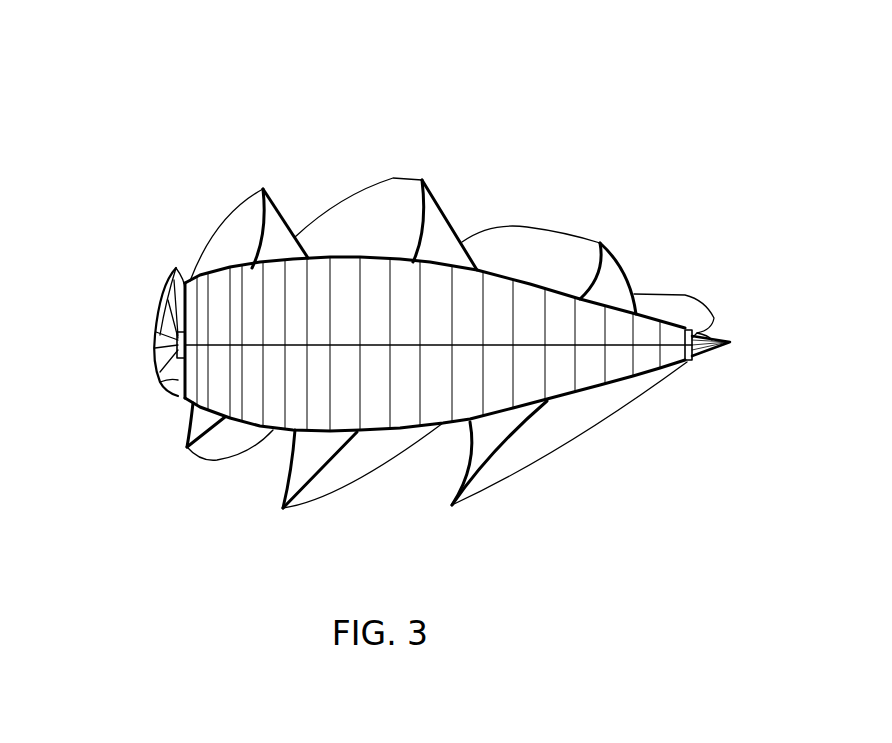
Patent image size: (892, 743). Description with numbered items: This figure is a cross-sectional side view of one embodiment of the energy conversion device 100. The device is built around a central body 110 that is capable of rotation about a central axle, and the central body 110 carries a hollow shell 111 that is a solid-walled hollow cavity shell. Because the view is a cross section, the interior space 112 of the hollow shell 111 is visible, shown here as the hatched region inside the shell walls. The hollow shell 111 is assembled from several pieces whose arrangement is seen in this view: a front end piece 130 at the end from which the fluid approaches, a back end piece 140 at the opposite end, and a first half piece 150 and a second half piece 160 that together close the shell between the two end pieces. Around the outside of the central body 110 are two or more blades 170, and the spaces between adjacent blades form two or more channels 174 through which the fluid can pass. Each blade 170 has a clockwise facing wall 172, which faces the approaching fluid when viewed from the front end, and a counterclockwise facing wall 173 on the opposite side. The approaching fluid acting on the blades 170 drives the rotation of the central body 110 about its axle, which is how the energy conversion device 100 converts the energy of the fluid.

The energy conversion device 100 is at (409, 310).
The central body 110 is at (438, 182).
The hollow shell 111 is at (674, 373).
The interior space 112 is at (530, 373).
The front end piece 130 is at (156, 299).
The back end piece 140 is at (716, 318).
The first half piece 150 is at (193, 257).
The second half piece 160 is at (191, 404).
The blade 170 is at (278, 504).
The clockwise facing wall 172 is at (376, 209).
The counterclockwise facing wall 173 is at (343, 480).
The channel 174 is at (443, 428).